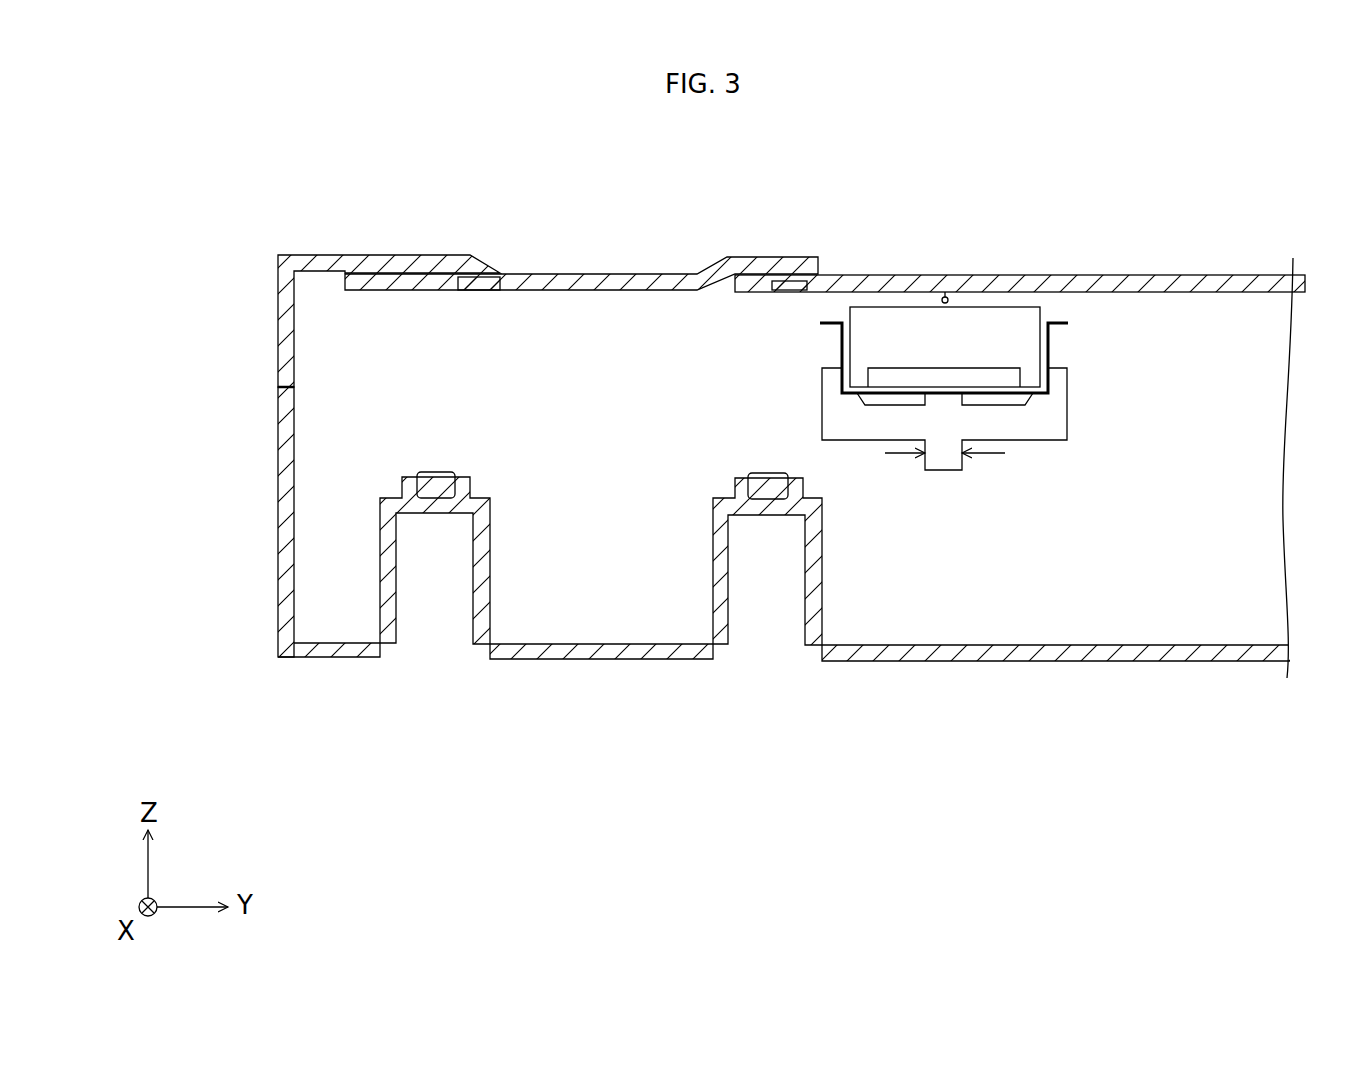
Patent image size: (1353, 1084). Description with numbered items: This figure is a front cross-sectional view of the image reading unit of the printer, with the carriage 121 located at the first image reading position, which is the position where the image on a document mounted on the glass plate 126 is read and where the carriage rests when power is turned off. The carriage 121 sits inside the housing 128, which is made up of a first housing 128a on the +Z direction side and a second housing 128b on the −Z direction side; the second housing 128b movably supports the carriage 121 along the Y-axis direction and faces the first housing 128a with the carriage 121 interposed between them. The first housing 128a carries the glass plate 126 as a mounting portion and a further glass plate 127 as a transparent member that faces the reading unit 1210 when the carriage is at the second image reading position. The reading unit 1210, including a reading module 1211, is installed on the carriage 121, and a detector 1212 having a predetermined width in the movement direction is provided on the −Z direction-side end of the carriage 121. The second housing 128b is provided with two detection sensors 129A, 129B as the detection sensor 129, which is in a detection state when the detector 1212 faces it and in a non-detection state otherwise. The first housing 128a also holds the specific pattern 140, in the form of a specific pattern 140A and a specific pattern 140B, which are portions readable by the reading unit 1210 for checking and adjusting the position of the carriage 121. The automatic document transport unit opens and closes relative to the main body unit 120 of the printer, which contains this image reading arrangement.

The main body unit 120 is at (307, 187).
The carriage 121 is at (1110, 459).
The glass plate 126 is at (1055, 276).
The glass plate 127 is at (612, 280).
The housing 128 is at (301, 456).
The first housing 128a is at (288, 303).
The second housing 128b is at (236, 522).
The detection sensor 129 is at (365, 816).
The detection sensor 129A is at (766, 490).
The detection sensor 129B is at (432, 488).
The specific pattern 140 is at (510, 201).
The specific pattern 140A is at (498, 286).
The specific pattern 140B is at (808, 287).
The reading unit 1210 is at (1032, 340).
The reading module 1211 is at (945, 292).
The detector 1212 is at (940, 472).